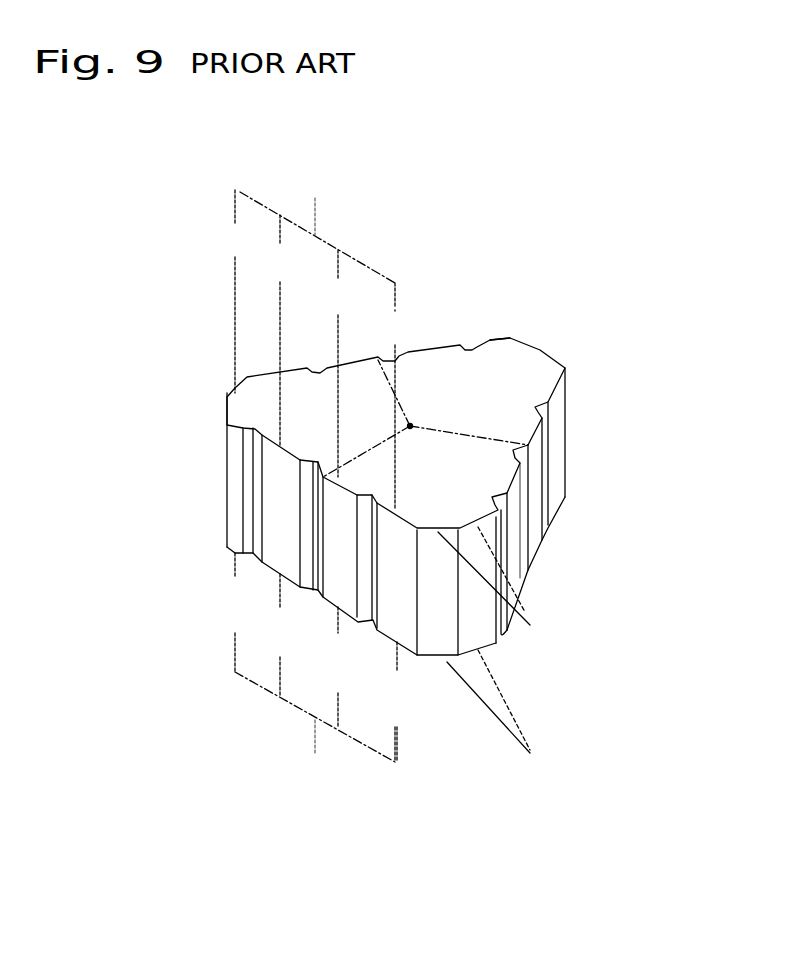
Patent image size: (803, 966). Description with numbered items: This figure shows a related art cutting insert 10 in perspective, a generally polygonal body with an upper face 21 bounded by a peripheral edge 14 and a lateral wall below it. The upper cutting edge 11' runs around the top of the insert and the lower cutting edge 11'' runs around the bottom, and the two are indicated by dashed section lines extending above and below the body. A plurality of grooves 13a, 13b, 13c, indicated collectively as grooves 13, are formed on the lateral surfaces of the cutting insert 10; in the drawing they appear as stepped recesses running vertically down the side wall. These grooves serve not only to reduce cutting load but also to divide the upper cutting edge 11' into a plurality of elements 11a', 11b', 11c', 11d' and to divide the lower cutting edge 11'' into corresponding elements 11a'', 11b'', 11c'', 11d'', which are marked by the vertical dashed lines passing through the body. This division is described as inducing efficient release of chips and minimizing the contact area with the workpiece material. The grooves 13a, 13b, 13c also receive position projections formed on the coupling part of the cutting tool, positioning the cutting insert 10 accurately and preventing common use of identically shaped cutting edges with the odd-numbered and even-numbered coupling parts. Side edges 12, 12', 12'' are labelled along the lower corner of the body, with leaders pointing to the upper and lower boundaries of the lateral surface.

The cutting insert 10 is at (590, 362).
The upper cutting edge 11' is at (315, 236).
The lower cutting edge 11'' is at (315, 709).
The element of upper cutting edge 11a' is at (222, 310).
The element of upper cutting edge 11b' is at (283, 331).
The element of upper cutting edge 11c' is at (341, 363).
The element of upper cutting edge 11d' is at (403, 410).
The element of lower cutting edge 11a'' is at (222, 582).
The element of lower cutting edge 11b'' is at (283, 635).
The element of lower cutting edge 11c'' is at (343, 667).
The element of lower cutting edge 11d'' is at (405, 702).
The side edges 12 is at (533, 668).
The upper side edge 12' is at (497, 589).
The lower side edge 12'' is at (504, 713).
The ribs 13 is at (211, 528).
The groove 13a is at (250, 465).
The groove 13b is at (300, 518).
The groove 13c is at (252, 561).
The peripheral edge 14 is at (505, 358).
The top face 21 is at (480, 395).